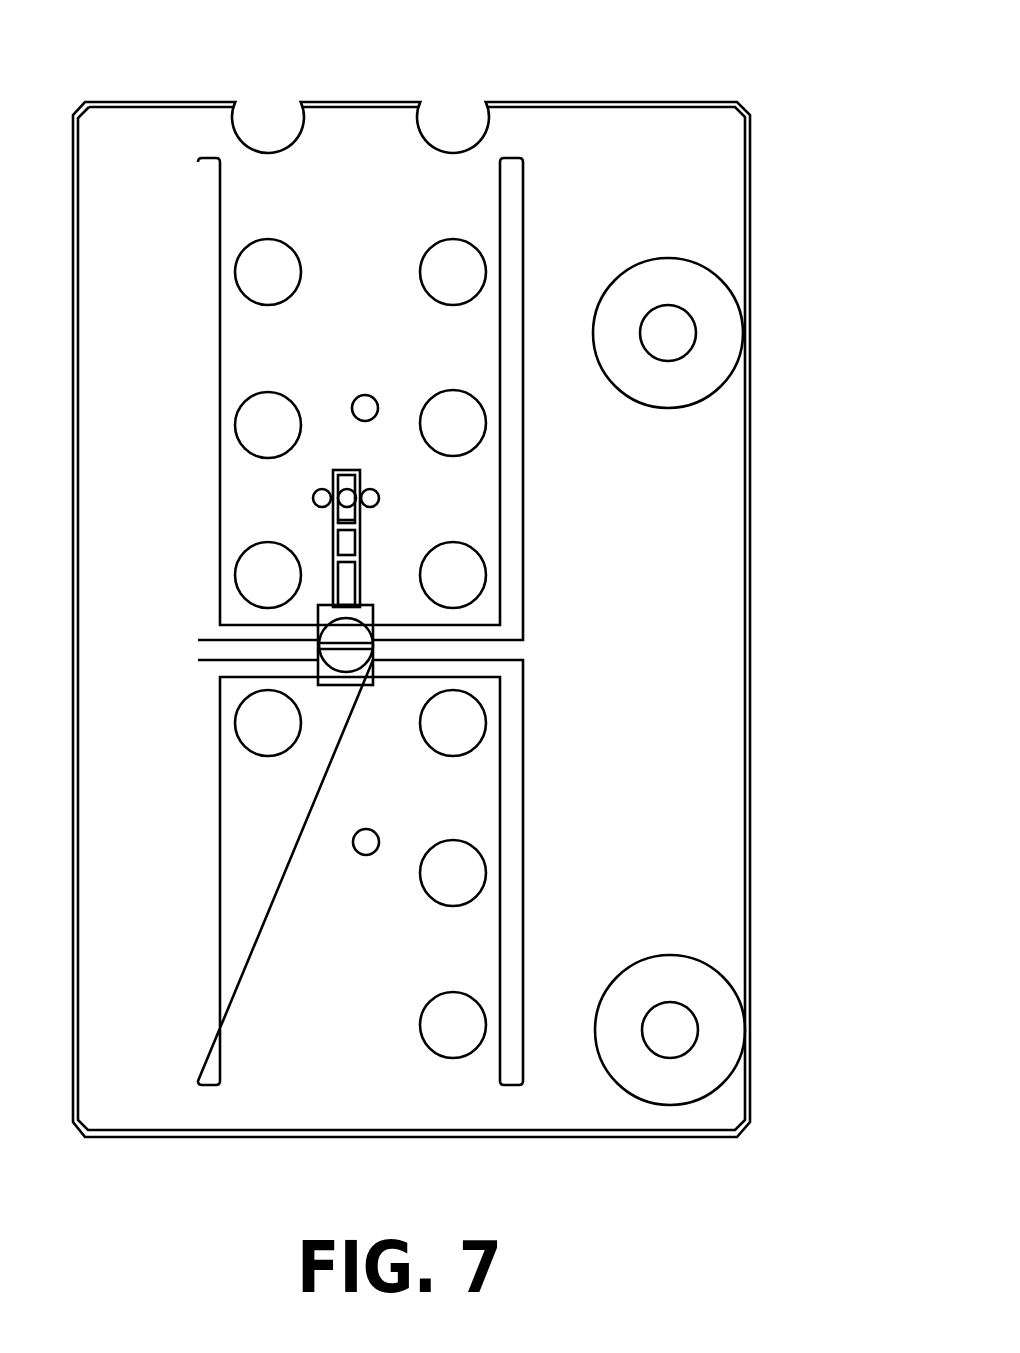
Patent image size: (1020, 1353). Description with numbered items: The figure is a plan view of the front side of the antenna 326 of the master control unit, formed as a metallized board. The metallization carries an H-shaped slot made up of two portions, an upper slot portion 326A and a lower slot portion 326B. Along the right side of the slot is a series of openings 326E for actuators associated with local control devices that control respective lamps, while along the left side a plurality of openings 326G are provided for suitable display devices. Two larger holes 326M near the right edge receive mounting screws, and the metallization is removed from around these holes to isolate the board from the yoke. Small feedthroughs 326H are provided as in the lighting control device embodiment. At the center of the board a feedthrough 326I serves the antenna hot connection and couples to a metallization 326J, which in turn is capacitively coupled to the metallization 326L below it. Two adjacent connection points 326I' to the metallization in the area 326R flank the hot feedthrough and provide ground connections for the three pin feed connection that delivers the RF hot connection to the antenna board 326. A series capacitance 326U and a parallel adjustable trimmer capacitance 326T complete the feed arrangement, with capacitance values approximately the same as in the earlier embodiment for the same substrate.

The antenna 326 is at (620, 83).
The slot portion 326A is at (208, 340).
The slot portion 326B is at (517, 813).
The openings 326G is at (266, 134).
The openings 326E is at (465, 138).
The holes 326M is at (712, 227).
The feedthroughs 326H is at (373, 378).
The area 326R is at (385, 437).
The feedthrough 326I is at (347, 480).
The connection points 326I' is at (360, 496).
The series capacitance 326U is at (338, 540).
The metallization 326J is at (347, 517).
The metallization 326L is at (345, 578).
The parallel adjustable trimmer capacitance 326T is at (348, 683).